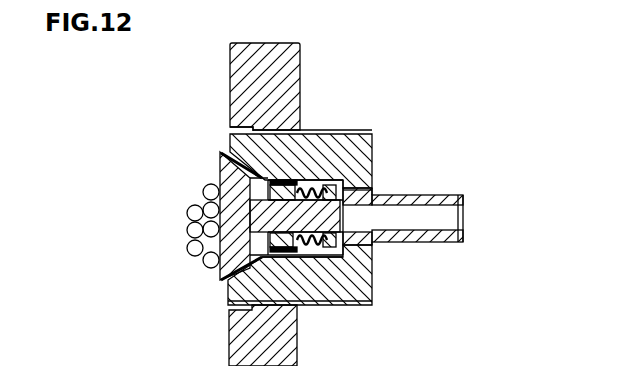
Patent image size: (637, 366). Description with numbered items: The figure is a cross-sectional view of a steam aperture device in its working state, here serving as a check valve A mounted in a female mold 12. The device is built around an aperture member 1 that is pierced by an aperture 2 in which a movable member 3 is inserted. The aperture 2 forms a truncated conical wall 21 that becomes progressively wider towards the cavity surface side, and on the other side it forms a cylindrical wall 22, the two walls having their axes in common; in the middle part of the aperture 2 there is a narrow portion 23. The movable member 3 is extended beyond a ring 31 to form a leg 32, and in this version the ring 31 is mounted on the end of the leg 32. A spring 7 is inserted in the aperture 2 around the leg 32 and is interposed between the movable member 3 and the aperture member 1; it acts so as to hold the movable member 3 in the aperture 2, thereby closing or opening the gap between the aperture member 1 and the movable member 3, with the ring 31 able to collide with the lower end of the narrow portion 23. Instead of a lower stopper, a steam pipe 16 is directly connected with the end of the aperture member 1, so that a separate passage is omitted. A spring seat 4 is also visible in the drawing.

The female mold 12 is at (283, 78).
The aperture member 1 is at (375, 133).
The check valve A is at (372, 160).
The truncated conical wall 21 is at (244, 130).
The cylindrical wall 22 is at (276, 258).
The movable member 3 is at (228, 170).
The aperture 2 is at (366, 285).
The spring 7 is at (318, 190).
The spring seat 4 is at (296, 262).
The ring 31 is at (346, 198).
The leg 32 is at (352, 240).
The steam pipe 16 is at (442, 238).
The narrow portion 23 is at (325, 290).